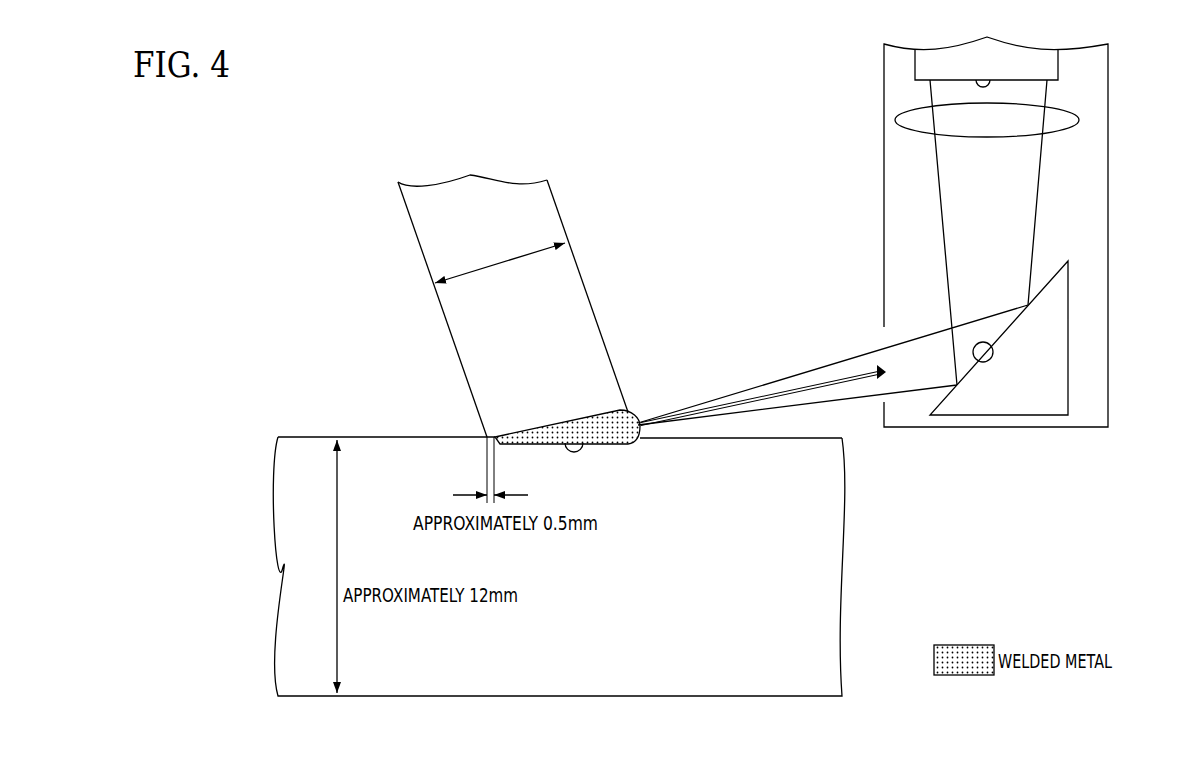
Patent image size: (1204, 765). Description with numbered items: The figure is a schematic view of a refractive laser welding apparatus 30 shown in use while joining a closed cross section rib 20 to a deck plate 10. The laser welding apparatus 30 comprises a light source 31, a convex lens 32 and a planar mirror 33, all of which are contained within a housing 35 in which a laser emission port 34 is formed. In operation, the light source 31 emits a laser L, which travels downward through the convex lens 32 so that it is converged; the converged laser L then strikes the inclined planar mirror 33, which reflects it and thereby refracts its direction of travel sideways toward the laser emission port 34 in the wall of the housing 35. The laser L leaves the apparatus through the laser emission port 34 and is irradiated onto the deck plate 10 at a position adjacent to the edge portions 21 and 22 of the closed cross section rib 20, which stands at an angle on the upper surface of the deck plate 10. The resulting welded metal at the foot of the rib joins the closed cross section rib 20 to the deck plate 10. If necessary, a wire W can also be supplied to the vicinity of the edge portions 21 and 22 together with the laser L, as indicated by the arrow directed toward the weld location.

The deck plate 10 is at (517, 663).
The closed cross section rib 20 is at (531, 213).
The edge portion 21 is at (610, 390).
The edge portion 22 is at (592, 438).
The laser welding apparatus 30 is at (921, 217).
The light source 31 is at (983, 90).
The convex lens 32 is at (1060, 110).
The planar mirror 33 is at (976, 362).
The laser emission port 34 is at (890, 344).
The housing 35 is at (884, 206).
The laser L is at (1035, 237).
The wire W is at (838, 385).